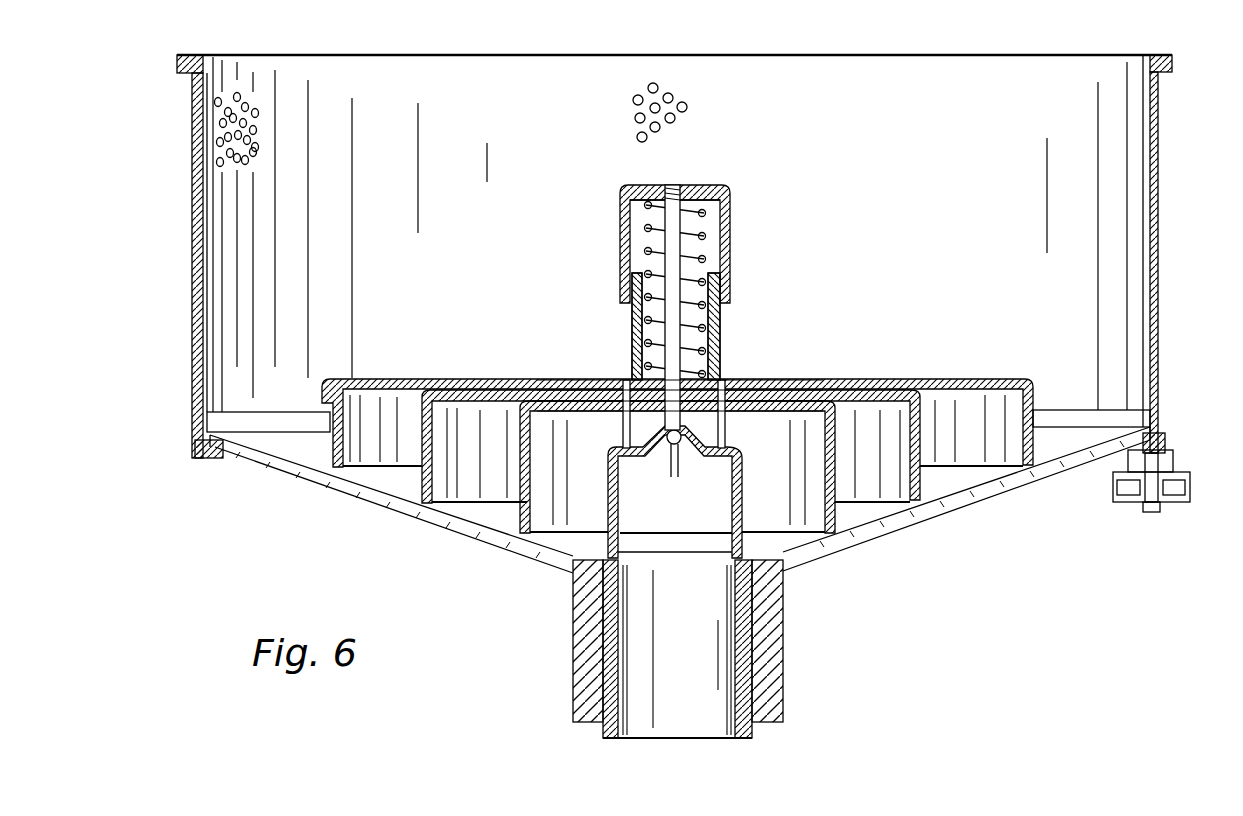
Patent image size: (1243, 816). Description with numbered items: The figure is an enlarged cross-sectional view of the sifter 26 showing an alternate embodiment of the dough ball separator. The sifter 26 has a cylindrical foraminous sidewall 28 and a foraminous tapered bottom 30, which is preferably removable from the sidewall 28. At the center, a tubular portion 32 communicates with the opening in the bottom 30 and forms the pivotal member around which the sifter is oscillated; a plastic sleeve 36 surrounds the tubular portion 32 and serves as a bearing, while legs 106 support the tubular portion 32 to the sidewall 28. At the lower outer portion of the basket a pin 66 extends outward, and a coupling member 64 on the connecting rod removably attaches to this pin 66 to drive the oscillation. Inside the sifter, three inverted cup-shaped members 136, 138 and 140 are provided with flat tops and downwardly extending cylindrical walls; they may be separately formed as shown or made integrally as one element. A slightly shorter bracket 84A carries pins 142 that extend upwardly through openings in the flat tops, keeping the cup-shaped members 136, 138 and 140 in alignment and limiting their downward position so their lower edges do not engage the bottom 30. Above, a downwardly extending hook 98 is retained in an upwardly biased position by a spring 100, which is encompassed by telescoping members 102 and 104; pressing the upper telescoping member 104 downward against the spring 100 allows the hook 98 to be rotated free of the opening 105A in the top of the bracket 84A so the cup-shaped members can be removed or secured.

The sifter 26 is at (1160, 58).
The cylindrical foraminous sidewall 28 is at (1158, 270).
The foraminous tapered bottom 30 is at (958, 500).
The tubular portion 32 is at (745, 662).
The plastic sleeve 36 is at (775, 617).
The coupling member 64 is at (1192, 490).
The pin 66 is at (1160, 510).
The bracket 84A is at (810, 553).
The hook 98 is at (666, 312).
The spring 100 is at (705, 242).
The telescoping member 102 is at (633, 350).
The upper telescoping member 104 is at (628, 240).
The ball 105A is at (700, 428).
The legs 106 is at (420, 515).
The inverted cup-shaped member 136 is at (848, 379).
The inverted cup-shaped member 138 is at (930, 387).
The inverted cup-shaped member 140 is at (1027, 379).
The pins 142 is at (624, 455).